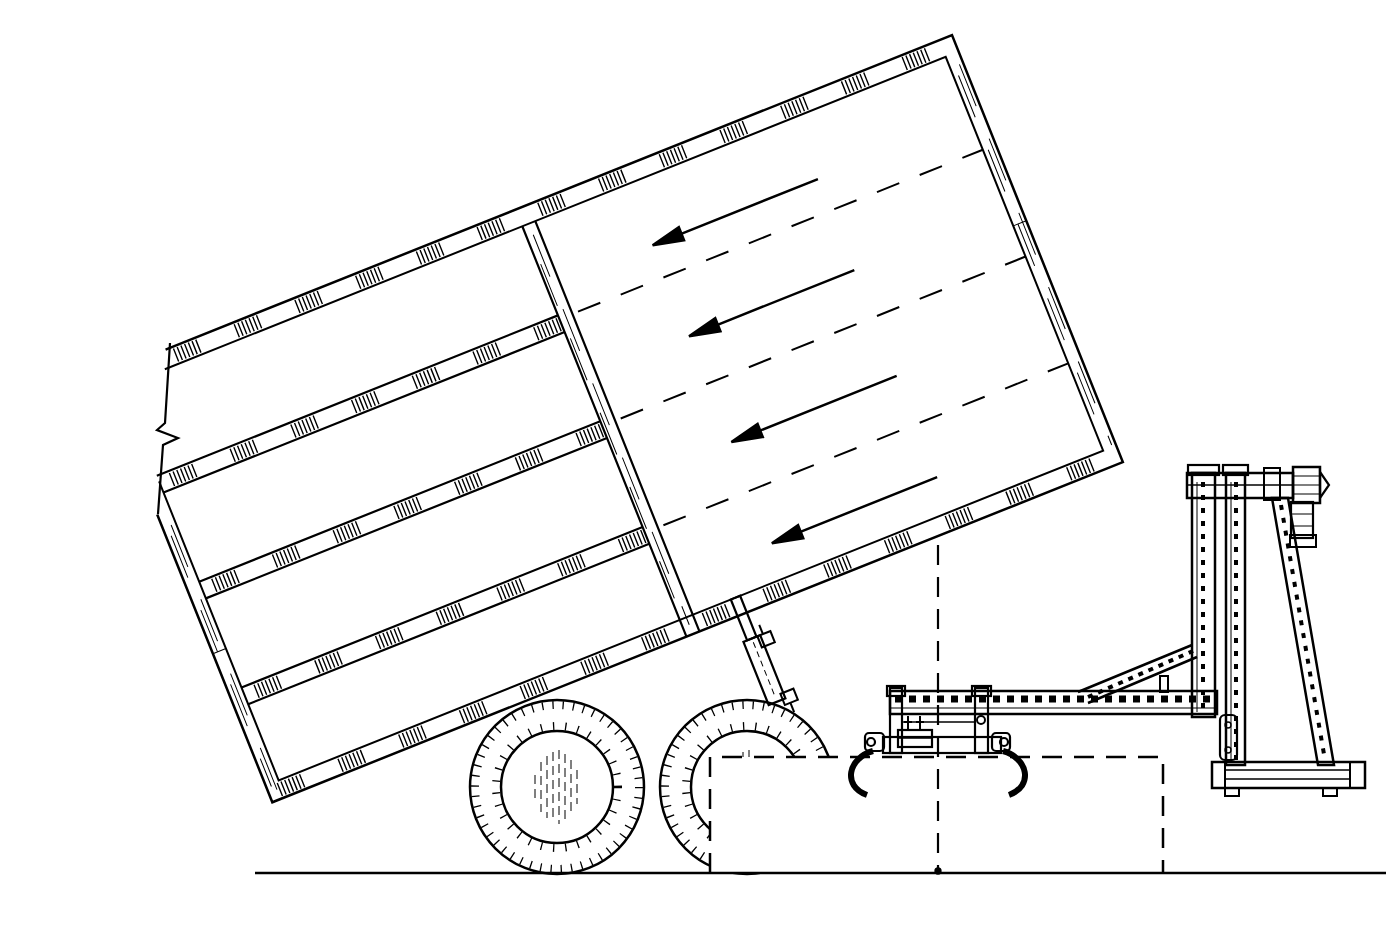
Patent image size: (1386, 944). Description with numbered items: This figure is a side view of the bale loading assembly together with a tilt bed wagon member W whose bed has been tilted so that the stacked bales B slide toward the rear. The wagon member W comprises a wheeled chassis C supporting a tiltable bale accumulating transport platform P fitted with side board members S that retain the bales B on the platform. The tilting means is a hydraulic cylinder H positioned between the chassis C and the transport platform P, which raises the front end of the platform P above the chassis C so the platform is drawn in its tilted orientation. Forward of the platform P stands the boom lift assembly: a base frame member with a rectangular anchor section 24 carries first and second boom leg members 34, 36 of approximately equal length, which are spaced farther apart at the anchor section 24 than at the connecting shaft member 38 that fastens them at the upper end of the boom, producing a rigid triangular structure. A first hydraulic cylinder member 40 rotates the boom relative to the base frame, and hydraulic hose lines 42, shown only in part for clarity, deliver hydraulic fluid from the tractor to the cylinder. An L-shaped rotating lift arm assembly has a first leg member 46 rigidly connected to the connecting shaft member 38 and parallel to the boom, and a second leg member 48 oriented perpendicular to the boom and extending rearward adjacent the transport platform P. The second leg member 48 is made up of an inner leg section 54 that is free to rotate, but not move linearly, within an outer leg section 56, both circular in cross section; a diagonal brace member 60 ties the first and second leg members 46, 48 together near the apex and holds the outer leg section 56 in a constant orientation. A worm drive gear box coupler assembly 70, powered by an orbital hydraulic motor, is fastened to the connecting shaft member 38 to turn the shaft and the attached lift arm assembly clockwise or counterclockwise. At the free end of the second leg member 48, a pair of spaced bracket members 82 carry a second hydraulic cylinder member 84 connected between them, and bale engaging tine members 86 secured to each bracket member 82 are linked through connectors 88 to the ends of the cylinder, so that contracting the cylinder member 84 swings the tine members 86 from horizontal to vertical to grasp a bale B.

The anchor section 24 is at (1289, 782).
The first boom leg member 34 is at (1246, 628).
The second boom leg member 36 is at (1307, 630).
The connecting shaft member 38 is at (1250, 478).
The first hydraulic cylinder member 40 is at (1220, 739).
The hydraulic hose lines 42 is at (770, 640).
The first leg member 46 is at (1200, 570).
The second leg member 48 is at (1065, 644).
The inner leg section 54 is at (945, 690).
The outer leg section 56 is at (1073, 692).
The diagonal brace member 60 is at (1165, 660).
The worm drive gear box coupler assembly 70 is at (1300, 468).
The bracket members 82 is at (988, 714).
The second hydraulic cylinder member 84 is at (920, 745).
The bale engaging tine members 86 is at (850, 774).
The connectors 88 is at (866, 742).
The tilt bed wagon member W is at (1058, 221).
The transport platform P is at (1000, 512).
The side board members S is at (975, 100).
The bales B is at (644, 592).
The wheeled chassis C is at (683, 728).
The hydraulic cylinder H is at (762, 670).